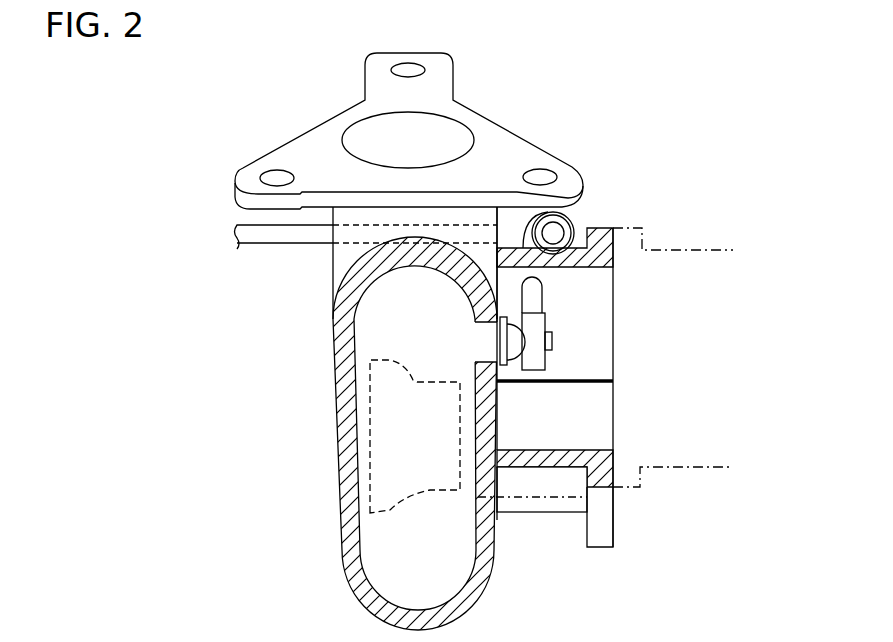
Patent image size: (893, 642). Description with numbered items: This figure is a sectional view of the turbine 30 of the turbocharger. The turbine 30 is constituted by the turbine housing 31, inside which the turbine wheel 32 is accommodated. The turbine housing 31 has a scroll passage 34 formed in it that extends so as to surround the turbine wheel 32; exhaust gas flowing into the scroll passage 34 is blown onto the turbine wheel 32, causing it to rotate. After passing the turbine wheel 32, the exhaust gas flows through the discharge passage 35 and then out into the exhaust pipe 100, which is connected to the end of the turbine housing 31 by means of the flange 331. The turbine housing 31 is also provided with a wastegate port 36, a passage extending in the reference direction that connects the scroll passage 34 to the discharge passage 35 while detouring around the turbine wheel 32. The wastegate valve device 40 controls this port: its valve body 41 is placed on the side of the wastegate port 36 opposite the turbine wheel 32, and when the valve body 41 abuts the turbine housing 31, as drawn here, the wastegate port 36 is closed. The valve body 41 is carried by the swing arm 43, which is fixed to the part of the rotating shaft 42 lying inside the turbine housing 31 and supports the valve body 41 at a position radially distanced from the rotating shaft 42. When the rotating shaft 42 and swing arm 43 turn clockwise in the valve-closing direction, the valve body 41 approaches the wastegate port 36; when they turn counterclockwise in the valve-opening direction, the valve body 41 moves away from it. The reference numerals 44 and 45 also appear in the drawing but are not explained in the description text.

The turbine 30 is at (175, 120).
The turbine housing 31 is at (297, 158).
The turbine wheel 32 is at (362, 404).
The flange 331 is at (608, 477).
The scroll passage 34 is at (403, 307).
The discharge passage 35 is at (582, 400).
The wastegate port 36 is at (497, 350).
The wastegate valve device 40 is at (595, 343).
The valve body 41 is at (500, 333).
The rotating shaft 42 is at (545, 288).
The swing arm 43 is at (538, 372).
The roller 44 is at (575, 212).
The plate 45 is at (264, 243).
The exhaust pipe 100 is at (693, 470).